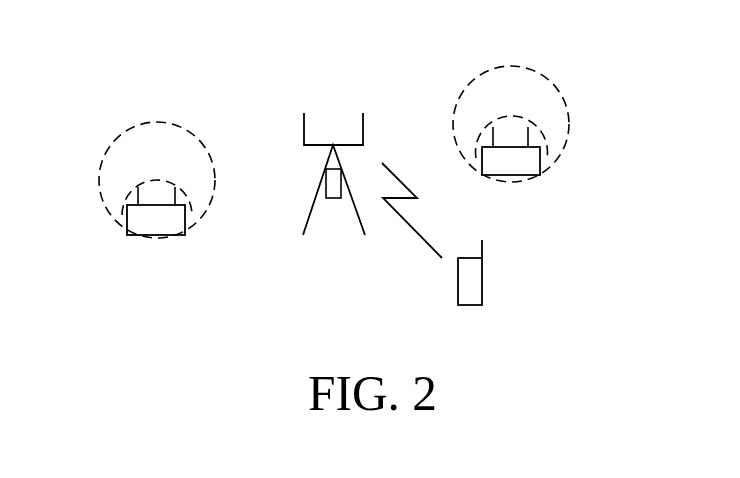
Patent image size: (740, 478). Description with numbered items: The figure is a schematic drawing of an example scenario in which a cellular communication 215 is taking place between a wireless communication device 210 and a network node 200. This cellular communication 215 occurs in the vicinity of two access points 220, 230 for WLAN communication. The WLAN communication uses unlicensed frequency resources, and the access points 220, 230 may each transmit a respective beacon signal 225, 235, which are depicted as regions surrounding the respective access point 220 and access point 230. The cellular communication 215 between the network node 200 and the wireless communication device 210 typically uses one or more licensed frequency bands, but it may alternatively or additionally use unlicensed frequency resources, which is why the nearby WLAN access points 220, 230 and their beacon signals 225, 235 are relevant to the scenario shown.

The network node 200 is at (326, 186).
The wireless communication device 210 is at (483, 282).
The cellular communication 215 is at (403, 225).
The access point 220 is at (512, 145).
The beacon signal 225 is at (571, 125).
The access point 230 is at (157, 207).
The beacon signal 235 is at (118, 142).